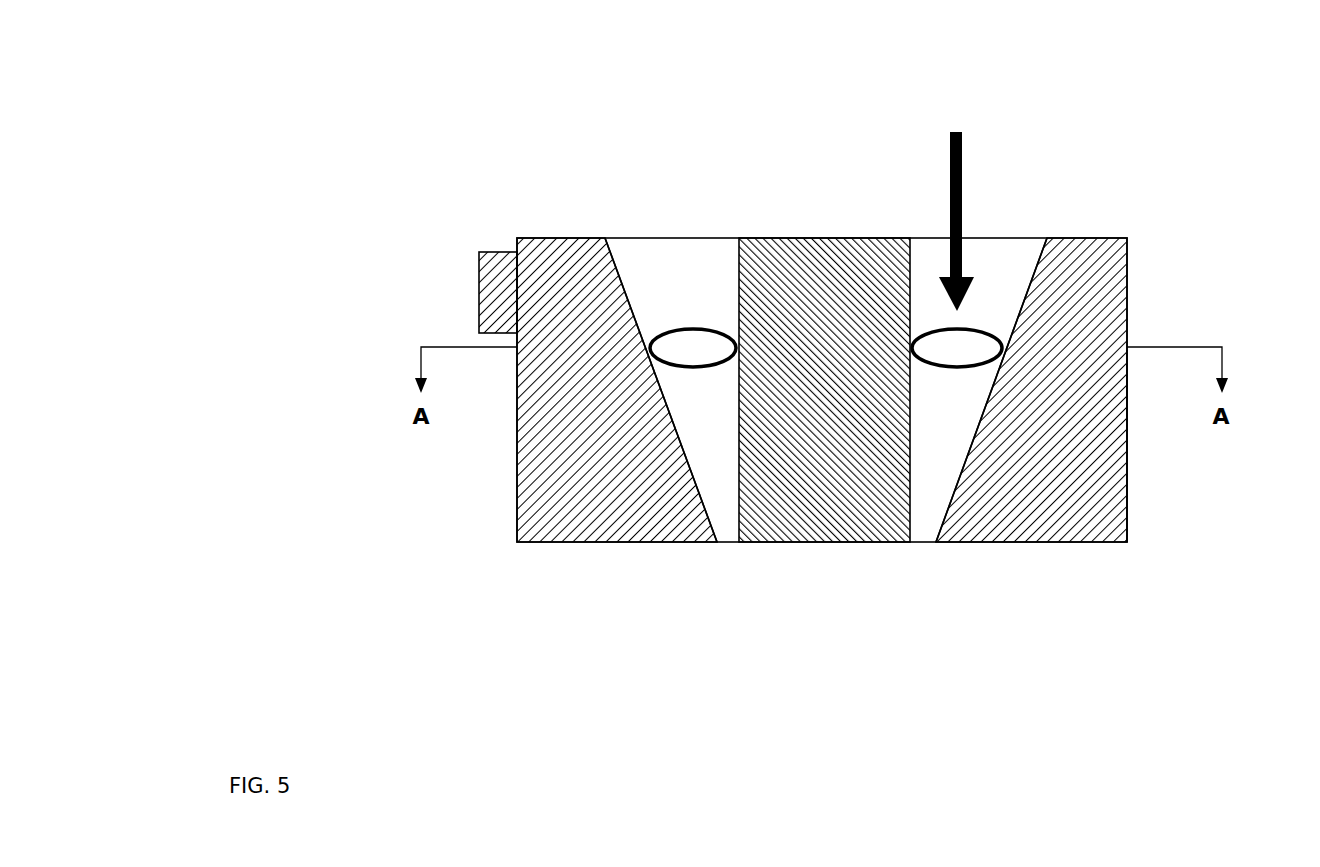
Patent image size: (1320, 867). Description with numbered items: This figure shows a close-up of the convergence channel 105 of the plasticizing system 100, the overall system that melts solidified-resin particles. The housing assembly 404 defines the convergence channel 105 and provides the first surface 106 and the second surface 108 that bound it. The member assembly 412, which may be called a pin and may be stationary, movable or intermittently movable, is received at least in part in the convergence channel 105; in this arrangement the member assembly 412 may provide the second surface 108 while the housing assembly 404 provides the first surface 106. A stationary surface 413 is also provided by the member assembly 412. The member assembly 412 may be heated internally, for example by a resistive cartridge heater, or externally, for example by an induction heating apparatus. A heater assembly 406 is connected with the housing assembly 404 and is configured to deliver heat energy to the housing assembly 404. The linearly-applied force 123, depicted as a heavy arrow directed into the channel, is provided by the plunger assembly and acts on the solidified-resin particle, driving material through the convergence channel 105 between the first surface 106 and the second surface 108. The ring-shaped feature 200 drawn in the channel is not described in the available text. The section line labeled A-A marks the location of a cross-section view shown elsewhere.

The plasticizing system 100 is at (1295, 452).
The convergence channel 105 is at (1017, 262).
The first surface 106 is at (613, 280).
The second surface 108 is at (1033, 272).
The linearly-applied force 123 is at (957, 130).
The seal ring 200 is at (690, 329).
The housing assembly 404 is at (1127, 389).
The heater assembly 406 is at (479, 293).
The member assembly 412 is at (825, 543).
The stationary surface 413 is at (740, 385).